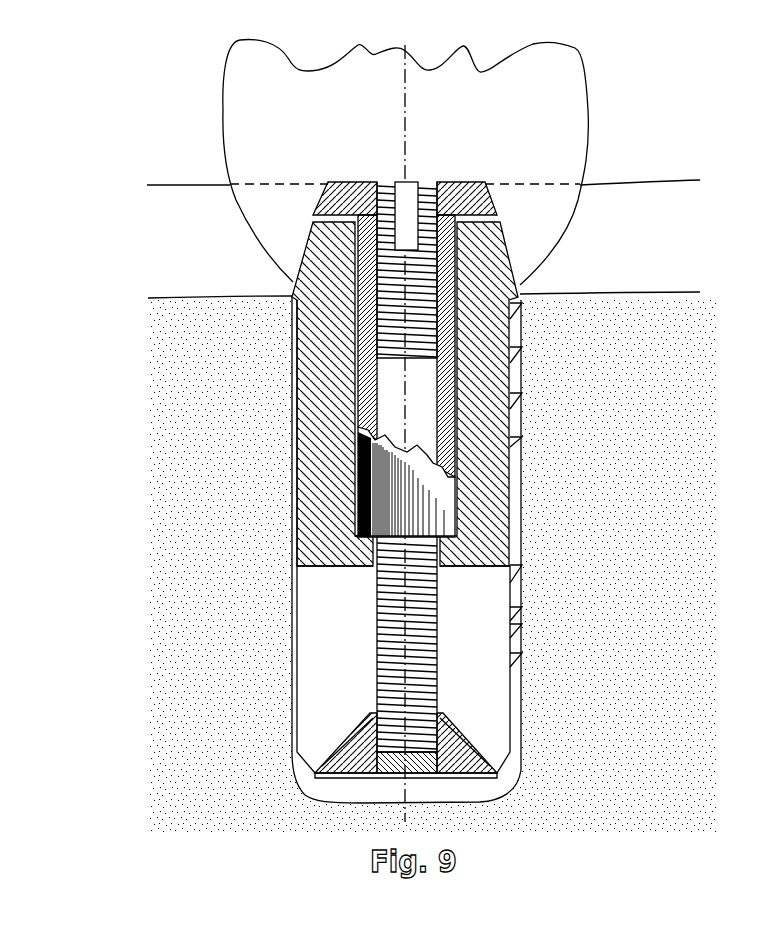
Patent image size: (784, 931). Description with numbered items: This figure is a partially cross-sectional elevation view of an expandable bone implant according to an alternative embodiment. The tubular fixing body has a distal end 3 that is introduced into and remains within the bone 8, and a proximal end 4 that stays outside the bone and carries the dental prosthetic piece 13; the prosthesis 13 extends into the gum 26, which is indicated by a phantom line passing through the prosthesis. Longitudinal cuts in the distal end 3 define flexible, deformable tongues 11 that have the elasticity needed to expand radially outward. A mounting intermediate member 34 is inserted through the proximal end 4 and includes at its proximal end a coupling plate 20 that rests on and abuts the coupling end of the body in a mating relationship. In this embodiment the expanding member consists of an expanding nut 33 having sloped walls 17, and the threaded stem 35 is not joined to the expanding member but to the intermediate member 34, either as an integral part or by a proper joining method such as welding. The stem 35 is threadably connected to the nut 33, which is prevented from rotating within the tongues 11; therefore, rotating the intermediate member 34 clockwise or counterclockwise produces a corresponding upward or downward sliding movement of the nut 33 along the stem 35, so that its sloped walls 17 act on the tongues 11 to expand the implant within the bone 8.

The distal end 3 is at (567, 697).
The proximal end 4 is at (558, 262).
The bone 8 is at (650, 557).
The deformable tongues 11 is at (349, 665).
The dental prosthetic piece 13 is at (588, 116).
The sloped walls 17 is at (327, 764).
The coupling plate 20 is at (491, 196).
The gum 26 is at (658, 274).
The expanding nut 33 is at (473, 773).
The intermediate member 34 is at (358, 317).
The stem 35 is at (378, 613).